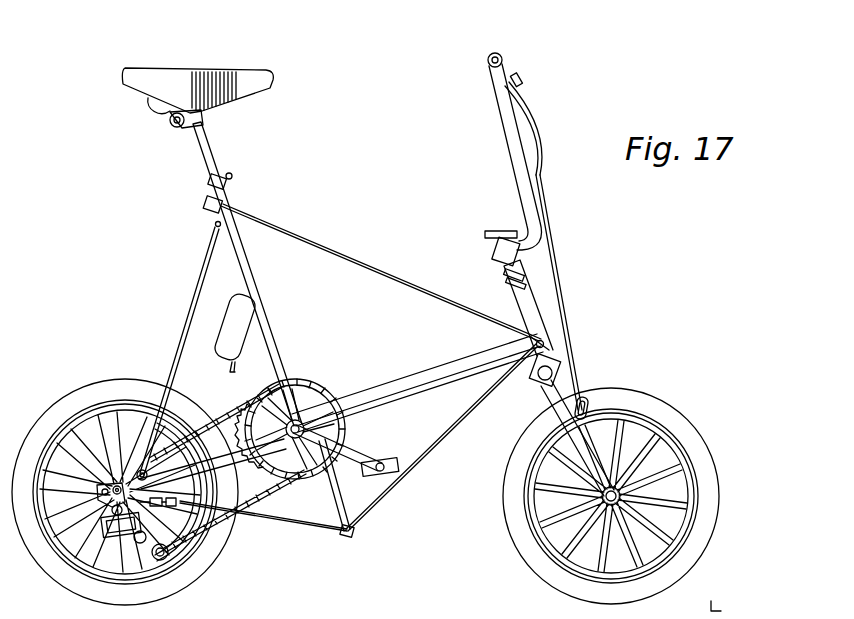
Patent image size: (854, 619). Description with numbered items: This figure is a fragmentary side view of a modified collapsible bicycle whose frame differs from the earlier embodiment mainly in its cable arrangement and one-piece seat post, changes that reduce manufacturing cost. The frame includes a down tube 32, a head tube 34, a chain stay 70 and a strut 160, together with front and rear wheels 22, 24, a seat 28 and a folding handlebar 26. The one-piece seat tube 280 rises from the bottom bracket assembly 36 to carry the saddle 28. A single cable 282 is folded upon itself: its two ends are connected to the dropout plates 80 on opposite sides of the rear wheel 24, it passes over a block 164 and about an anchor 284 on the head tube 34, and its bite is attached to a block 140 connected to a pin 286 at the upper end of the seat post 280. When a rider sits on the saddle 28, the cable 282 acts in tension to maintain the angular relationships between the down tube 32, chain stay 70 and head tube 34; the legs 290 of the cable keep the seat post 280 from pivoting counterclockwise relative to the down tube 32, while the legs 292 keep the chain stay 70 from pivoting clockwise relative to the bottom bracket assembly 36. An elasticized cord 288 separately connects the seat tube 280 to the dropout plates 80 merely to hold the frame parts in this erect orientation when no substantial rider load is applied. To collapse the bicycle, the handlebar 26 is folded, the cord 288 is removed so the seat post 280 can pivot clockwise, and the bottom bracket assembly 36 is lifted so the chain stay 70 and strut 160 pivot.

The front wheel 22 is at (668, 410).
The rear wheel 24 is at (171, 575).
The handlebar 26 is at (502, 150).
The seat 28 is at (247, 76).
The down tube 32 is at (401, 372).
The head tube 34 is at (535, 290).
The bottom bracket assembly 36 is at (311, 398).
The chain stay 70 is at (240, 510).
The dropout plates 80 is at (118, 405).
The block 140 is at (208, 200).
The strut 160 is at (358, 496).
The block 164 is at (351, 535).
The seat tube 280 is at (269, 310).
The cable 282 is at (283, 518).
The anchor 284 is at (545, 345).
The pin 286 is at (214, 217).
The elasticized cord 288 is at (202, 266).
The legs of cable 290 is at (381, 268).
The legs of cable 292 is at (260, 540).